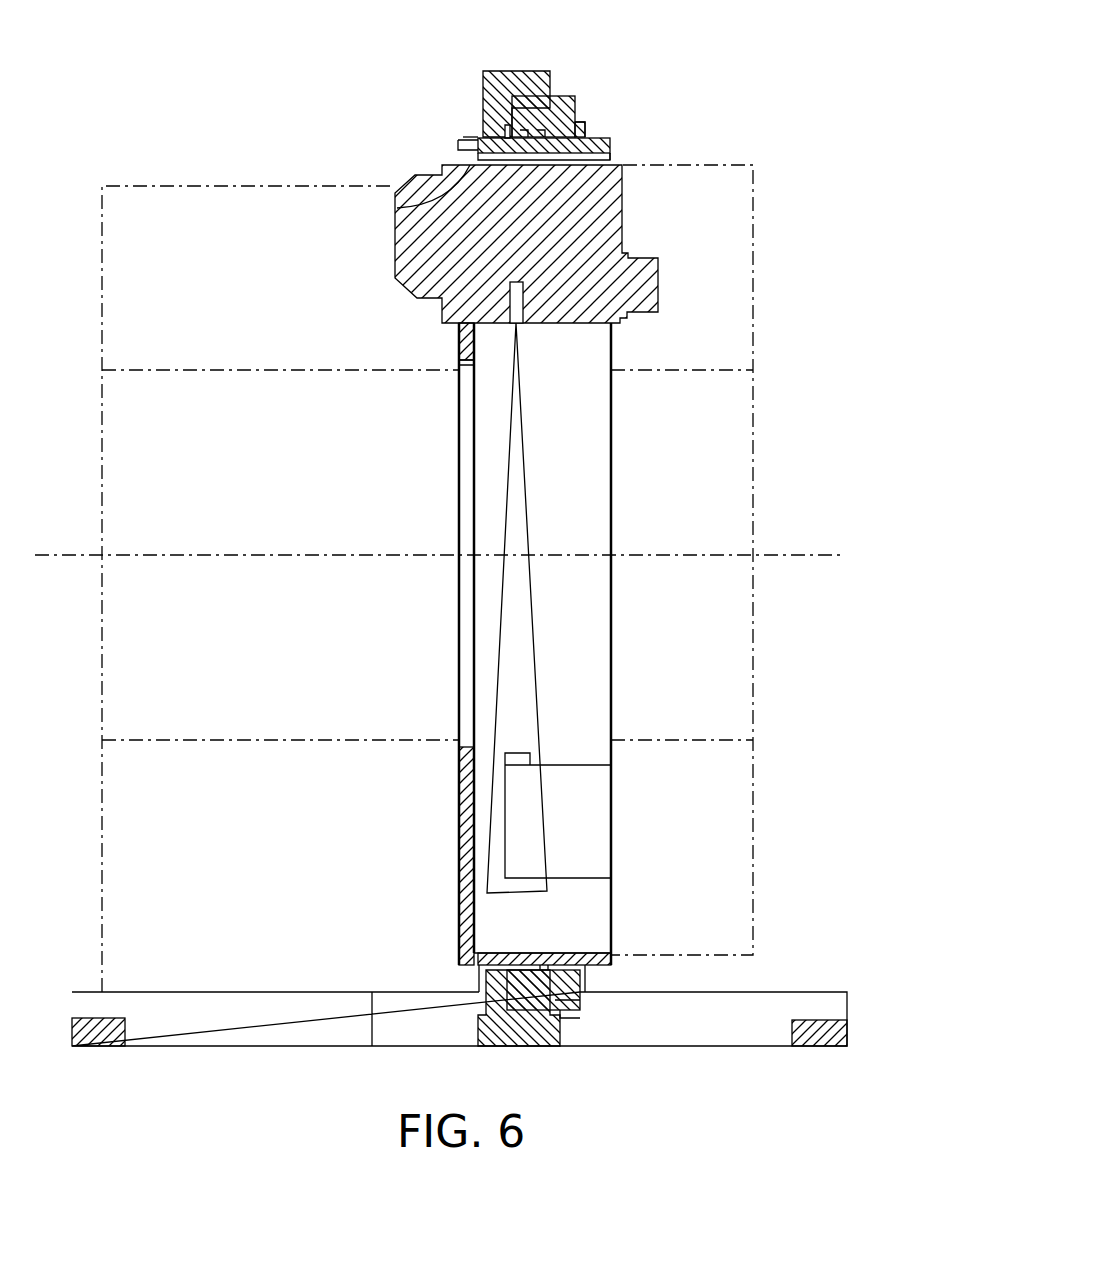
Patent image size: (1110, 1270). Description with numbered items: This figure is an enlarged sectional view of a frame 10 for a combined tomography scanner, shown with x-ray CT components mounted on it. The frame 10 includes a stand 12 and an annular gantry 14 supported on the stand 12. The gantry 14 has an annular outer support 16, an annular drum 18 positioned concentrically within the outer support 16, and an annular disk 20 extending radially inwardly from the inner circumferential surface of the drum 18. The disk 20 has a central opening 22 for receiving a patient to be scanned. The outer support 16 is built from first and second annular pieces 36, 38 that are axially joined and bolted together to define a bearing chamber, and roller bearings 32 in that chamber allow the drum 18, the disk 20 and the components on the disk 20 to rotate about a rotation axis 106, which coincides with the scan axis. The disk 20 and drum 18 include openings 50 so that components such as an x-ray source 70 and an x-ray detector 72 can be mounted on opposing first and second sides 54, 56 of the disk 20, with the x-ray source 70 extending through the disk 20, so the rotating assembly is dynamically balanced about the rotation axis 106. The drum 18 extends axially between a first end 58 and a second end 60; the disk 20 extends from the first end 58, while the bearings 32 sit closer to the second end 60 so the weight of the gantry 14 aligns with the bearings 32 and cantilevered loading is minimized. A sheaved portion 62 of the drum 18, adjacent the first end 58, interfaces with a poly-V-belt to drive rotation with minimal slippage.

The frame 10 is at (432, 432).
The stand 12 is at (497, 71).
The annular gantry 14 is at (422, 936).
The annular outer support 16 is at (576, 124).
The annular drum 18 is at (612, 140).
The annular disk 20 is at (459, 336).
The central opening 22 is at (462, 370).
The roller bearings 32 is at (554, 968).
The first annular piece 36 is at (555, 97).
The second annular piece 38 is at (588, 138).
The openings 50 is at (398, 207).
The first side 54 is at (155, 282).
The second side 56 is at (737, 306).
The first end 58 is at (458, 146).
The second end 60 is at (614, 152).
The sheaved portion 62 is at (463, 137).
The x-ray source 70 is at (624, 210).
The x-ray detector 72 is at (520, 753).
The rotation axis 106 is at (78, 555).